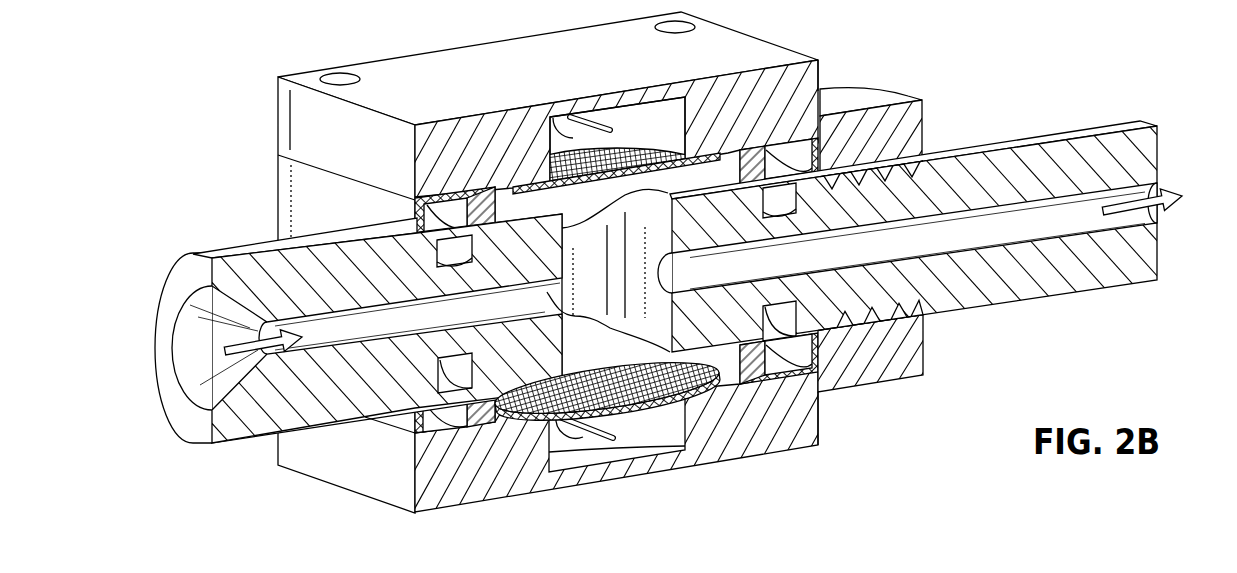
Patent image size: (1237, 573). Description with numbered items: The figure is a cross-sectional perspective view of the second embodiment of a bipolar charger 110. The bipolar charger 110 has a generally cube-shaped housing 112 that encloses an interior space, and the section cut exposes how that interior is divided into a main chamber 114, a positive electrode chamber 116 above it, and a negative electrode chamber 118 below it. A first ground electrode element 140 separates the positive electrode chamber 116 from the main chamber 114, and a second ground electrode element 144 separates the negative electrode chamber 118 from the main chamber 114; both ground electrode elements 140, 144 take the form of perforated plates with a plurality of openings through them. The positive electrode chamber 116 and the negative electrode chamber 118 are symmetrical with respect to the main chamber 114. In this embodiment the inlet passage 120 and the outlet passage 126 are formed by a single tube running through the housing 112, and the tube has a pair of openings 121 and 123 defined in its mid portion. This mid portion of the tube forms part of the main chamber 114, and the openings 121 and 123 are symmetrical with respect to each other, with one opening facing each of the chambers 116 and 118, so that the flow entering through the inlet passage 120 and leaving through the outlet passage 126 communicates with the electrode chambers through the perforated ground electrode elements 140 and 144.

The bipolar charger 110 is at (366, 30).
The housing 112 is at (733, 43).
The main chamber 114 is at (600, 355).
The positive electrode chamber 116 is at (669, 134).
The negative electrode chamber 118 is at (664, 435).
The inlet passage 120 is at (277, 262).
The opening 121 is at (653, 218).
The opening 123 is at (548, 291).
The outlet passage 126 is at (835, 88).
The first ground electrode element 140 is at (560, 188).
The second ground electrode element 144 is at (683, 367).